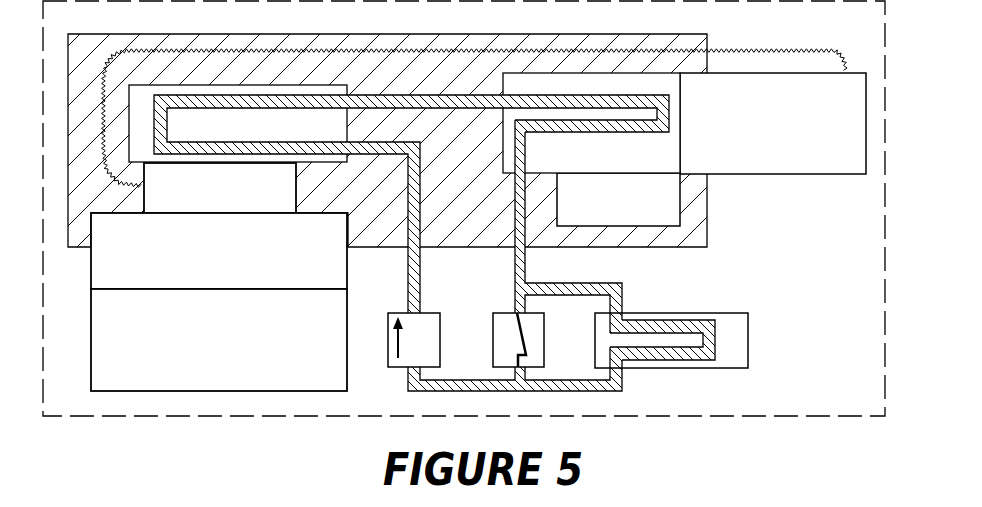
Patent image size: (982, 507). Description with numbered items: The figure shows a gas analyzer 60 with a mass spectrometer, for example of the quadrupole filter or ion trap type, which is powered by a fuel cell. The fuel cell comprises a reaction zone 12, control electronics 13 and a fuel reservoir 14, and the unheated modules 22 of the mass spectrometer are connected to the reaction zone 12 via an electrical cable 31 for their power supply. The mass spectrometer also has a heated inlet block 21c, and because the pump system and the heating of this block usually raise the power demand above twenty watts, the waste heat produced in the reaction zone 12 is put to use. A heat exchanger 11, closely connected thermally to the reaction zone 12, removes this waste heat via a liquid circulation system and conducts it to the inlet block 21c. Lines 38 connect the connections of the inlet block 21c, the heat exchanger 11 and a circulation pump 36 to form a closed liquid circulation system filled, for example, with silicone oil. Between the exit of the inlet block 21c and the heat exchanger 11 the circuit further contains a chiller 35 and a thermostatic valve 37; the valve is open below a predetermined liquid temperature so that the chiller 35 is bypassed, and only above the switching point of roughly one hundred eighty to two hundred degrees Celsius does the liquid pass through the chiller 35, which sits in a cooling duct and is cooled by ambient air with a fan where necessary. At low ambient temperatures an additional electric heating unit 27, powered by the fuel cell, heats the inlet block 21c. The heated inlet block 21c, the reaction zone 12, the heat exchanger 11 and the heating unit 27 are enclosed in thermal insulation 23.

The heat exchanger 11 is at (238, 123).
The reaction zone 12 is at (220, 188).
The control electronics 13 is at (219, 251).
The fuel reservoir 14 is at (219, 340).
The heated inlet block 21c is at (515, 123).
The unheated modules 22 is at (773, 123).
The thermal insulation 23 is at (399, 81).
The additional electric heating unit 27 is at (618, 199).
The electrical cable 31 is at (767, 55).
The chiller 35 is at (671, 340).
The circulation pump 36 is at (414, 340).
The thermostatic valve 37 is at (518, 340).
The lines 38 is at (517, 272).
The gas analyzer 60 is at (464, 208).